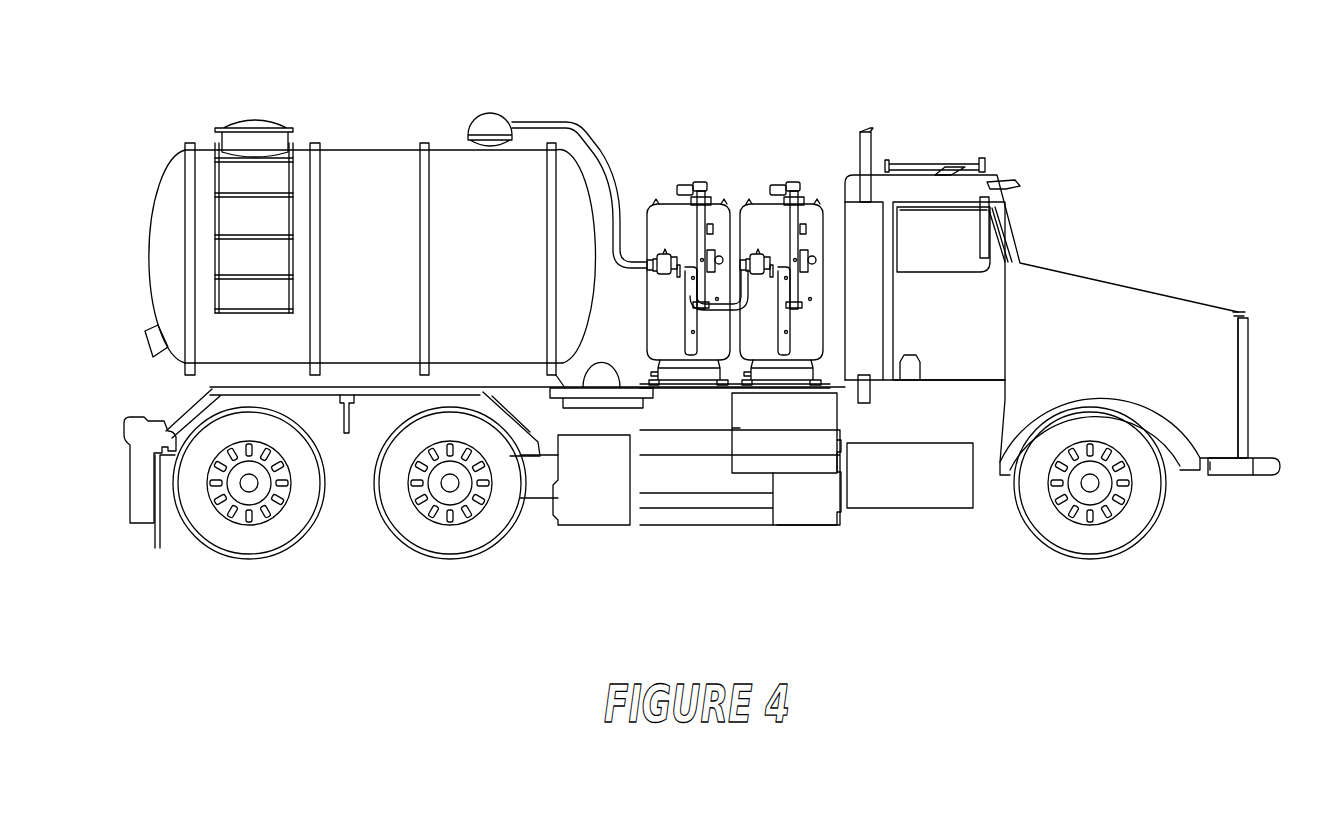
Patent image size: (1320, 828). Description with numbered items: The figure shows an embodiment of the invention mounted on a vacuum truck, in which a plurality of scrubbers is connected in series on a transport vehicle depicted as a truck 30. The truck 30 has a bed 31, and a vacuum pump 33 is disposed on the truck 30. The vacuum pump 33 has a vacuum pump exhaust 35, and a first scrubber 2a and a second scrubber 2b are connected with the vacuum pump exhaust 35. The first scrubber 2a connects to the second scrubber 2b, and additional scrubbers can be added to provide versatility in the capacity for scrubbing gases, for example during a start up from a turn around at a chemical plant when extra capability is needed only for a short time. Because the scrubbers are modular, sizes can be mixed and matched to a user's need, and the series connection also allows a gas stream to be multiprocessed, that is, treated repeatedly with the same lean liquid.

The truck 30 is at (1092, 305).
The vacuum pump 33 is at (375, 190).
The vacuum pump exhaust 35 is at (489, 127).
The first scrubber 2a is at (675, 222).
The second scrubber 2b is at (770, 222).
The bed 31 is at (560, 380).